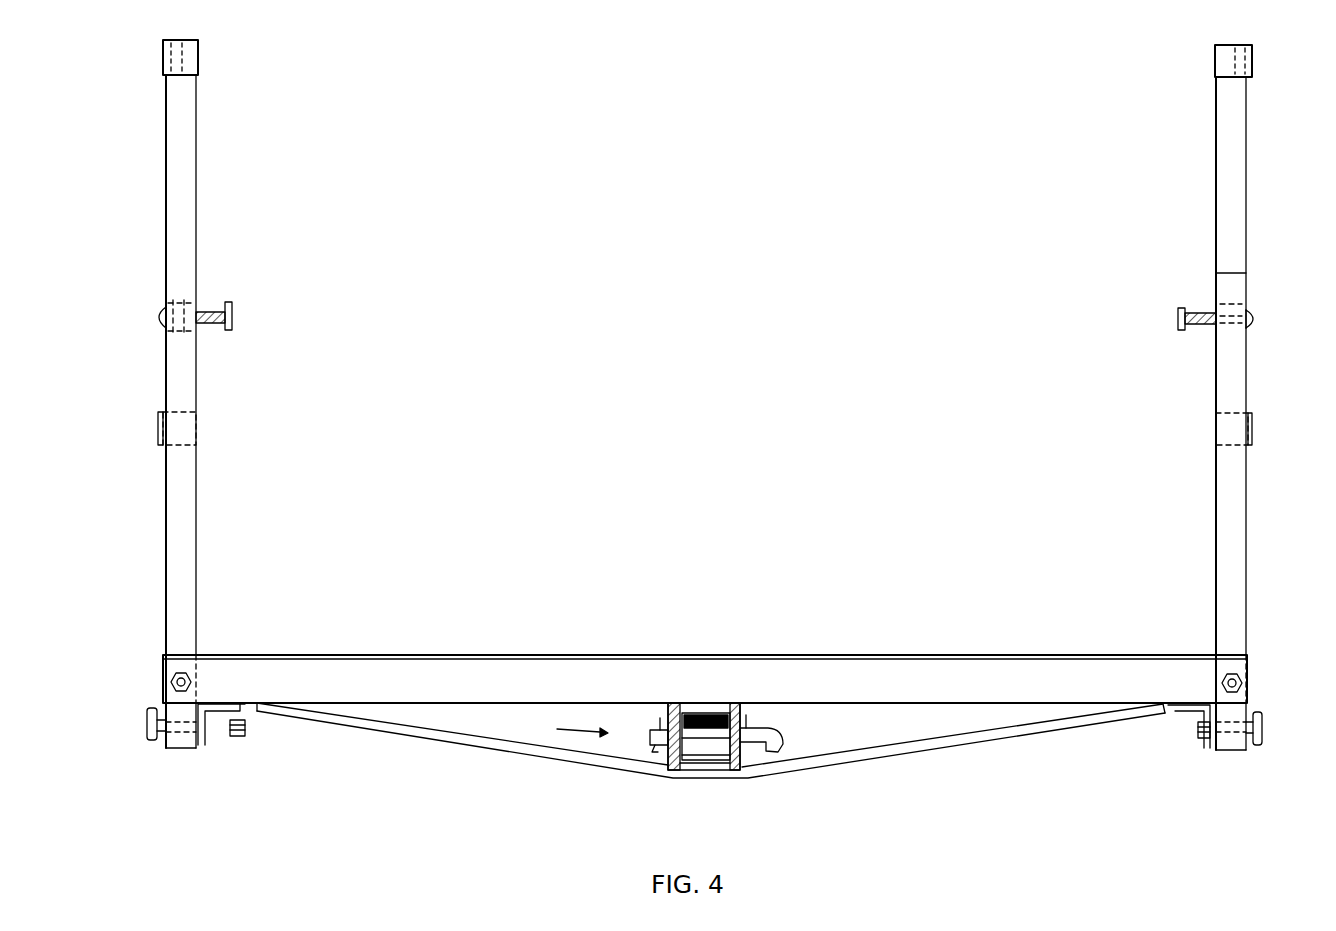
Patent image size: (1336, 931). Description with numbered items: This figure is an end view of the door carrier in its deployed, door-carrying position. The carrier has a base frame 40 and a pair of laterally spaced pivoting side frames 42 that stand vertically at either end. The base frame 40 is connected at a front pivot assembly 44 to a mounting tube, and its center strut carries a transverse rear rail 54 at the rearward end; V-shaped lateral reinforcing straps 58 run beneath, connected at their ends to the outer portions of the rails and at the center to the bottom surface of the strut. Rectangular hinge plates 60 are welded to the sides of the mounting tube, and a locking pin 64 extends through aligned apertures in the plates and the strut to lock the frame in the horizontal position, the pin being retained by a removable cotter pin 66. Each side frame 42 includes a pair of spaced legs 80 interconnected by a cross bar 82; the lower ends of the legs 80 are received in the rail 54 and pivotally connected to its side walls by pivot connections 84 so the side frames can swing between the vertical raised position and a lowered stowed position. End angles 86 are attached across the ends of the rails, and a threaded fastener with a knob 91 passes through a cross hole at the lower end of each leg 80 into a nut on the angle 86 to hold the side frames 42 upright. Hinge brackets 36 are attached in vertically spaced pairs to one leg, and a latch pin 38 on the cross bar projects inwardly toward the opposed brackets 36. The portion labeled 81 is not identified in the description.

The hinge bracket 36 is at (198, 58).
The latch pin 38 is at (232, 302).
The base frame 40 is at (460, 656).
The side frame 42 is at (196, 147).
The front pivot assembly 44 is at (563, 729).
The rear rail 54 is at (897, 657).
The lateral reinforcing strap 58 is at (805, 765).
The hinge plate 60 is at (668, 765).
The locking pin 64 is at (770, 740).
The cotter pin 66 is at (652, 750).
The leg 80 is at (183, 545).
The right leg section 81 is at (1222, 513).
The cross bar 82 is at (705, 335).
The pivot connection 84 is at (1225, 678).
The end angle 86 is at (237, 705).
The knob 91 is at (1305, 777).